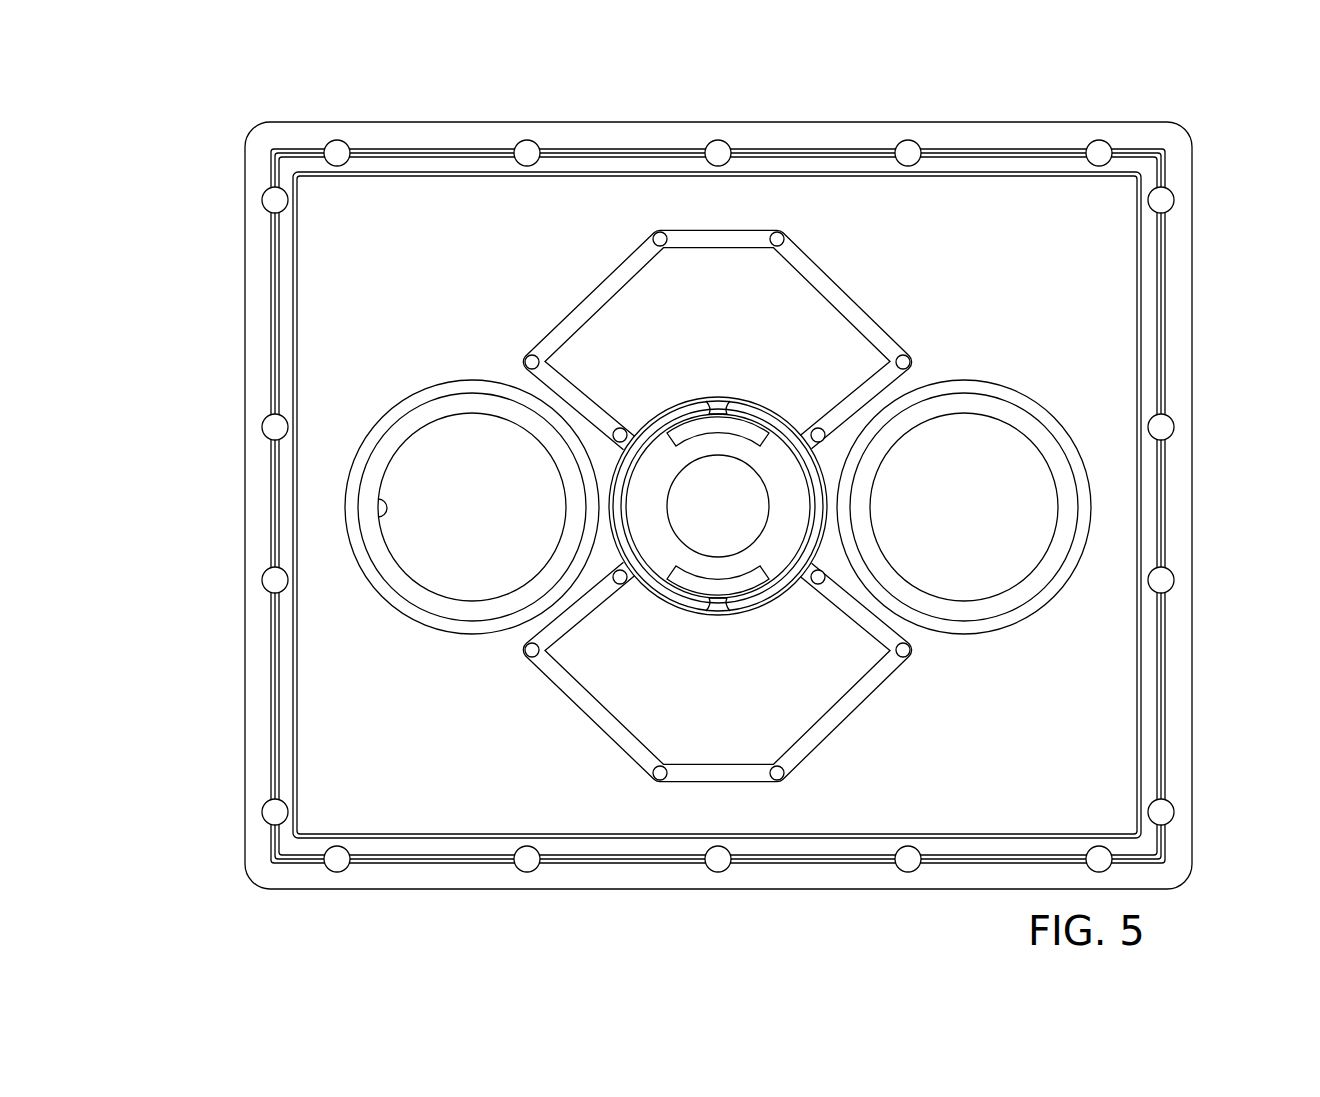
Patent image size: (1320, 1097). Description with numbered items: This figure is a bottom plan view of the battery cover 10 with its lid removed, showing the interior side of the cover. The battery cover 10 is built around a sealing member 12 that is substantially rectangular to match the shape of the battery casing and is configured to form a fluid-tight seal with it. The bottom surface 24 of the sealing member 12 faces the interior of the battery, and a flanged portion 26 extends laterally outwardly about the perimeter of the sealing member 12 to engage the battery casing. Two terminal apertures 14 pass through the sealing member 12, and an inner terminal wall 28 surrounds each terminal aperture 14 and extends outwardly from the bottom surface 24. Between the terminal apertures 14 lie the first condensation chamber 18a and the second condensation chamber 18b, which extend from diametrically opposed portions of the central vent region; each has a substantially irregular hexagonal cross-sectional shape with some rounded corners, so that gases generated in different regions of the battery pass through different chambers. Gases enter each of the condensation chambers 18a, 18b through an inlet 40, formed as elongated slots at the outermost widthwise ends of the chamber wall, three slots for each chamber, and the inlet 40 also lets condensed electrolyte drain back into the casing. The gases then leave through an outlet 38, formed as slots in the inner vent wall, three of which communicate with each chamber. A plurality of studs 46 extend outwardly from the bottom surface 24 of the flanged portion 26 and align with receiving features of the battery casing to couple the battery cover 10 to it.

The battery cover 10 is at (1218, 88).
The sealing member 12 is at (1102, 332).
The terminal apertures 14 is at (387, 525).
The first condensation chamber 18a is at (553, 645).
The second condensation chamber 18b is at (843, 293).
The bottom surface 24 is at (1097, 378).
The flanged portion 26 is at (257, 523).
The inner terminal wall 28 is at (387, 568).
The outlet 38 is at (755, 603).
The inlet 40 is at (807, 240).
The studs 46 is at (268, 812).